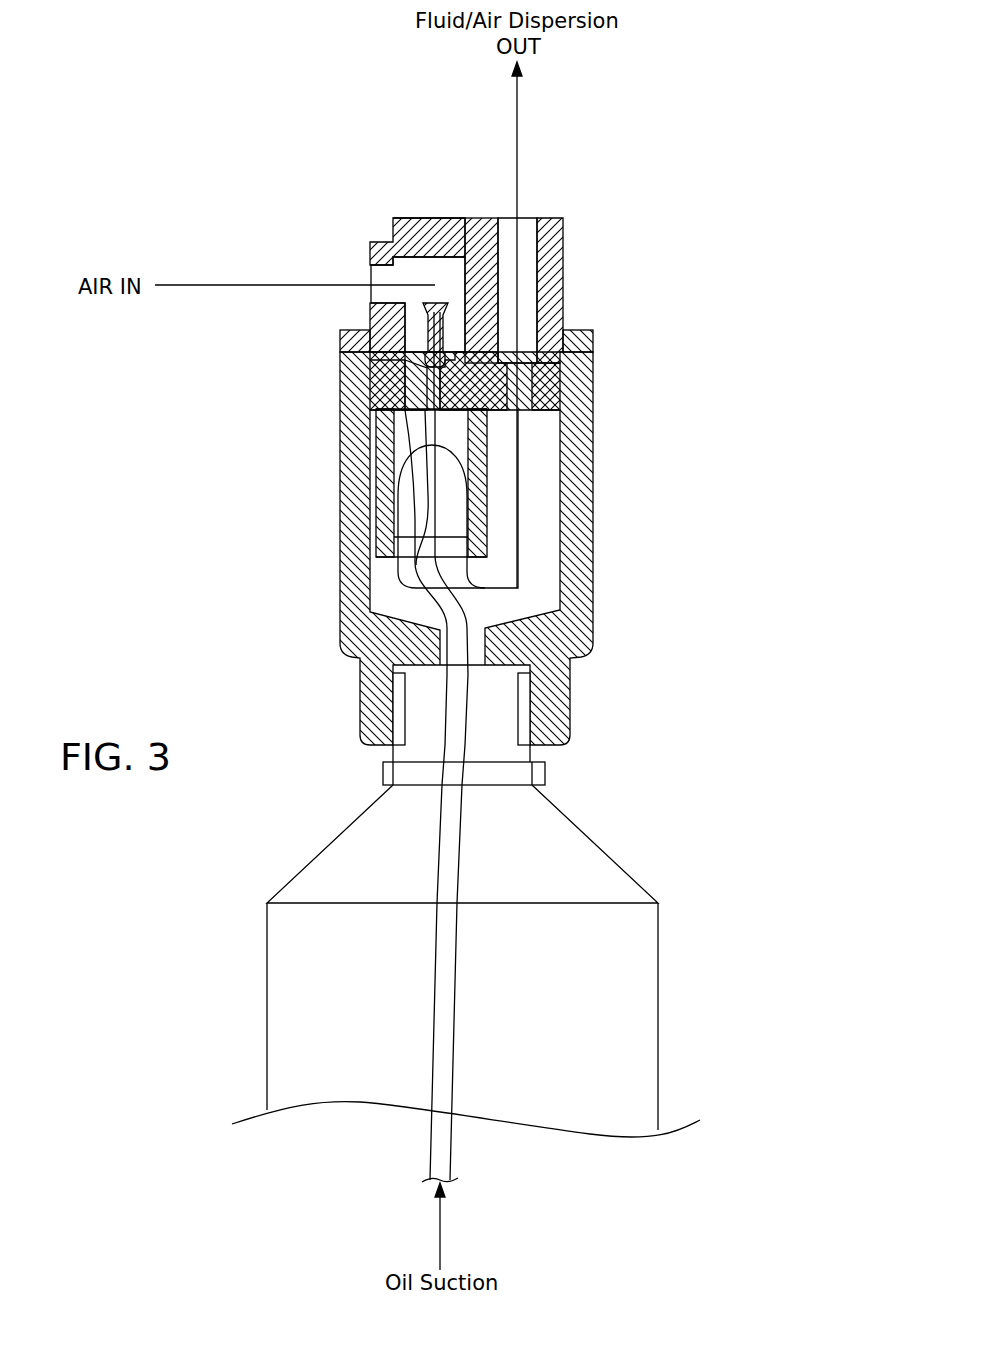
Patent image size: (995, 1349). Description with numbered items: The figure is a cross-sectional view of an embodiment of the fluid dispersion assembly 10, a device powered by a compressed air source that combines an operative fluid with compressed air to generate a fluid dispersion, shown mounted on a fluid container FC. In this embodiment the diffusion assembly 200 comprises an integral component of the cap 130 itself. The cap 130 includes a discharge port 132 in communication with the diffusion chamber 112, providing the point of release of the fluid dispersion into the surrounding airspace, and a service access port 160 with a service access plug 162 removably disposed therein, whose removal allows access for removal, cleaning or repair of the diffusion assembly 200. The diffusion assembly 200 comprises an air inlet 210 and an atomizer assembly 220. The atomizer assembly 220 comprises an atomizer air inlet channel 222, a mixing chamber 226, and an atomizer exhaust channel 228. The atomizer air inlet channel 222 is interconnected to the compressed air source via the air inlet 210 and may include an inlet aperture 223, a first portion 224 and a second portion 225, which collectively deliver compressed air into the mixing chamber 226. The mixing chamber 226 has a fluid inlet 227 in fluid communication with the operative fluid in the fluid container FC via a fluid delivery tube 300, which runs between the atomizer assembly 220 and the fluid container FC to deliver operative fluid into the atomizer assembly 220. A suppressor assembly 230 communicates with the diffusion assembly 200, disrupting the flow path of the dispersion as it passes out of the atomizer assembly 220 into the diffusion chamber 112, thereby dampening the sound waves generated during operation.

The fluid dispersion assembly 10 is at (220, 101).
The diffusion chamber 112 is at (535, 588).
The cap 130 is at (563, 246).
The discharge port 132 is at (547, 207).
The service access port 160 is at (412, 203).
The service access plug 162 is at (433, 228).
The diffusion assembly 200 is at (325, 237).
The air inlet 210 is at (346, 266).
The atomizer assembly 220 is at (410, 338).
The atomizer air inlet channel 222 is at (416, 294).
The inlet aperture 223 is at (441, 286).
The first portion 224 is at (410, 327).
The second portion 225 is at (594, 345).
The mixing chamber 226 is at (450, 360).
The fluid inlet 227 is at (406, 358).
The atomizer exhaust channel 228 is at (487, 411).
The suppressor assembly 230 is at (362, 487).
The fluid delivery tube 300 is at (440, 1003).
The fluid container FC is at (657, 1055).